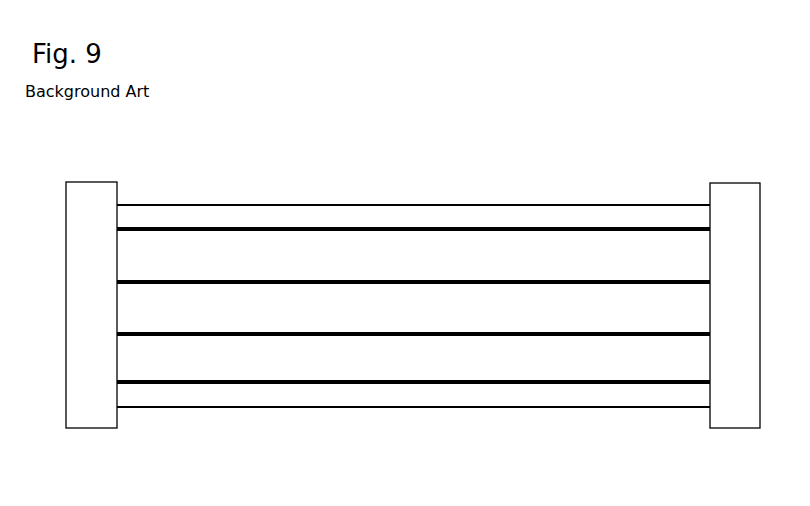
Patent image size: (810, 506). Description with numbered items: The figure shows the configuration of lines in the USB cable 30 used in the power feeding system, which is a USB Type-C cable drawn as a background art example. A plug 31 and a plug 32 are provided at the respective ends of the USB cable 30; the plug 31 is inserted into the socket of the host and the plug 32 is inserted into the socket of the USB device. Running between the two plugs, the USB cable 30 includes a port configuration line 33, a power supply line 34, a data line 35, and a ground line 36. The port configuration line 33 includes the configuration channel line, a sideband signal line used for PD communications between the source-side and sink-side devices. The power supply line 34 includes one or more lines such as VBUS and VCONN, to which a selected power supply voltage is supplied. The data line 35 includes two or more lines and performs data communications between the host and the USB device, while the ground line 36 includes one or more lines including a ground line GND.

The USB cable 30 is at (656, 168).
The plug 31 is at (92, 182).
The plug 32 is at (735, 183).
The port configuration line 33 is at (565, 227).
The power supply line 34 is at (484, 280).
The data line 35 is at (222, 336).
The ground line 36 is at (297, 384).